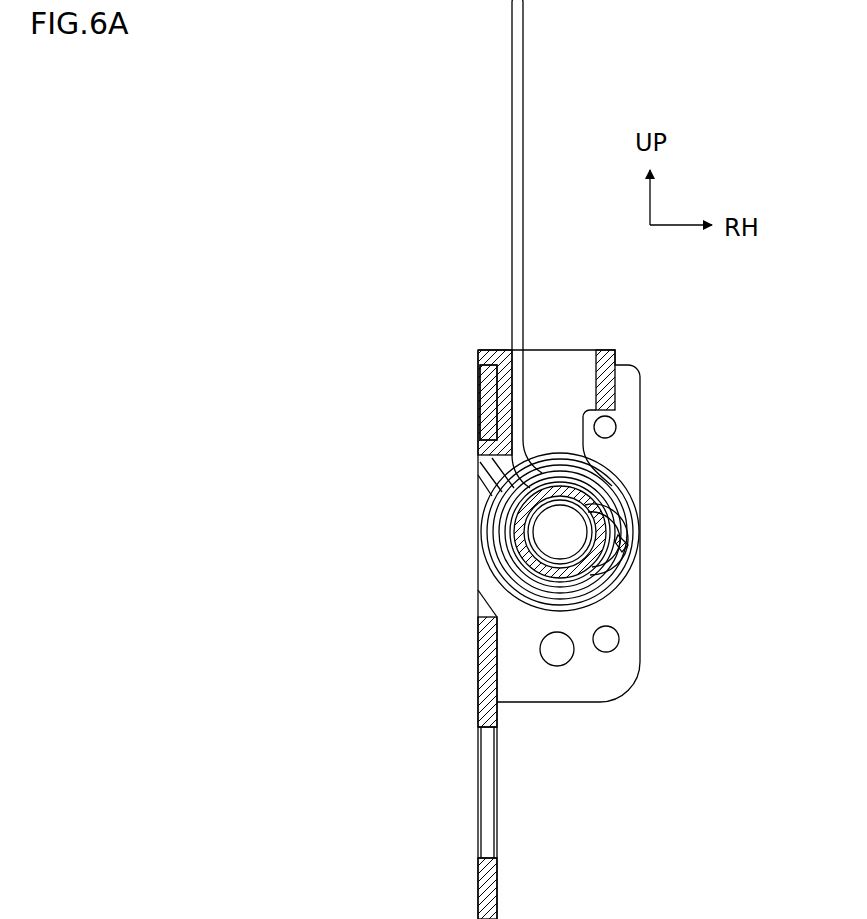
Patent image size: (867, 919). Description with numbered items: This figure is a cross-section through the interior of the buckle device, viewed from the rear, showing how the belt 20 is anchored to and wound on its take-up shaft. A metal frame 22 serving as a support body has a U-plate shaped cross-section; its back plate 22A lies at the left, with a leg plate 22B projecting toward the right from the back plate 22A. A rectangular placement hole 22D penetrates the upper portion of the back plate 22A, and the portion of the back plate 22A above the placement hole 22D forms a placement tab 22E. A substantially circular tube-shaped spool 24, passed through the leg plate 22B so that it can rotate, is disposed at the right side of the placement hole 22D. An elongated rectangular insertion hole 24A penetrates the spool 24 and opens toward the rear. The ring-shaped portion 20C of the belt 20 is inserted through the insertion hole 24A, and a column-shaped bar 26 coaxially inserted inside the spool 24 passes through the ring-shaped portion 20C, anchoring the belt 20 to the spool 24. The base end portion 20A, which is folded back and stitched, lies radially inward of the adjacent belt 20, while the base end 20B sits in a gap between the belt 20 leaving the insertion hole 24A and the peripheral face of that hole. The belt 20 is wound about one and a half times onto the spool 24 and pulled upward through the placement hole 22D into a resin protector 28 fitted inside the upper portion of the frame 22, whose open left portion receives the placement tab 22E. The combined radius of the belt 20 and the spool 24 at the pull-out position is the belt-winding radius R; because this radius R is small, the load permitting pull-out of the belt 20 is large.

The belt 20 is at (525, 128).
The base end portion 20A is at (607, 480).
The base end 20B is at (622, 552).
The ring-shaped portion 20C is at (490, 512).
The frame 22 is at (559, 634).
The back plate 22A is at (478, 679).
The leg plate 22B is at (642, 672).
The rectangular placement hole 22D is at (478, 449).
The placement tab 22E is at (478, 410).
The spool 24 is at (492, 532).
The insertion hole 24A is at (617, 545).
The bar 26 is at (607, 505).
The protector 28 is at (568, 350).
The belt-winding radius R is at (552, 524).